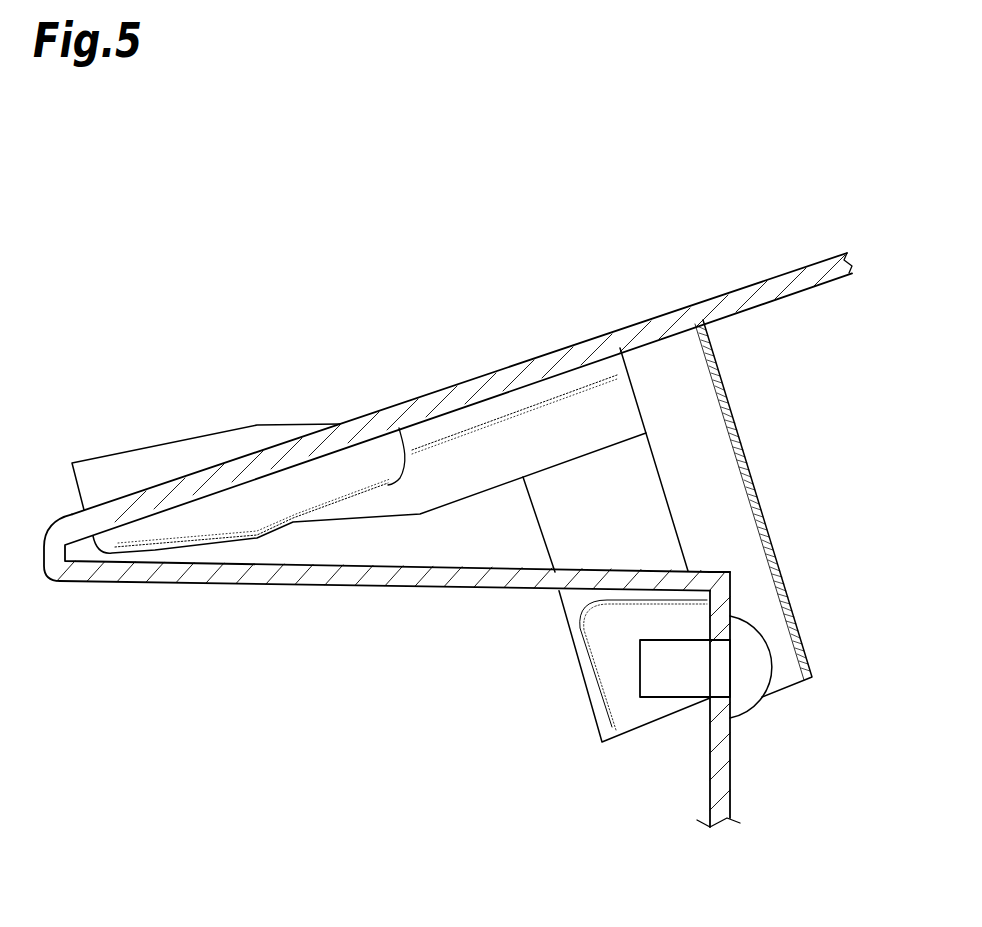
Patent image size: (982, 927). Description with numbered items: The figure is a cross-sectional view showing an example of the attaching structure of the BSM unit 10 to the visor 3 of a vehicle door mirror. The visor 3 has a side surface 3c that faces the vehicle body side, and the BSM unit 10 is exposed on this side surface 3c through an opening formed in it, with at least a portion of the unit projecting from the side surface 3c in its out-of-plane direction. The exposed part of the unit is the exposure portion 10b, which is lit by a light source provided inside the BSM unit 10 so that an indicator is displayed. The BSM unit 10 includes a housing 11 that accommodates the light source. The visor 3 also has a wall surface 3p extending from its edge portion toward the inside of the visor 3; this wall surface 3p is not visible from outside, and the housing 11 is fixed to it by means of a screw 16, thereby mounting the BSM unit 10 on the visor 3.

The visor 3 is at (645, 285).
The side surface 3c is at (490, 372).
The wall surface 3p is at (722, 777).
The BSM unit 10 is at (752, 405).
The exposure portion 10b is at (170, 450).
The housing 11 is at (726, 473).
The screw 16 is at (757, 660).